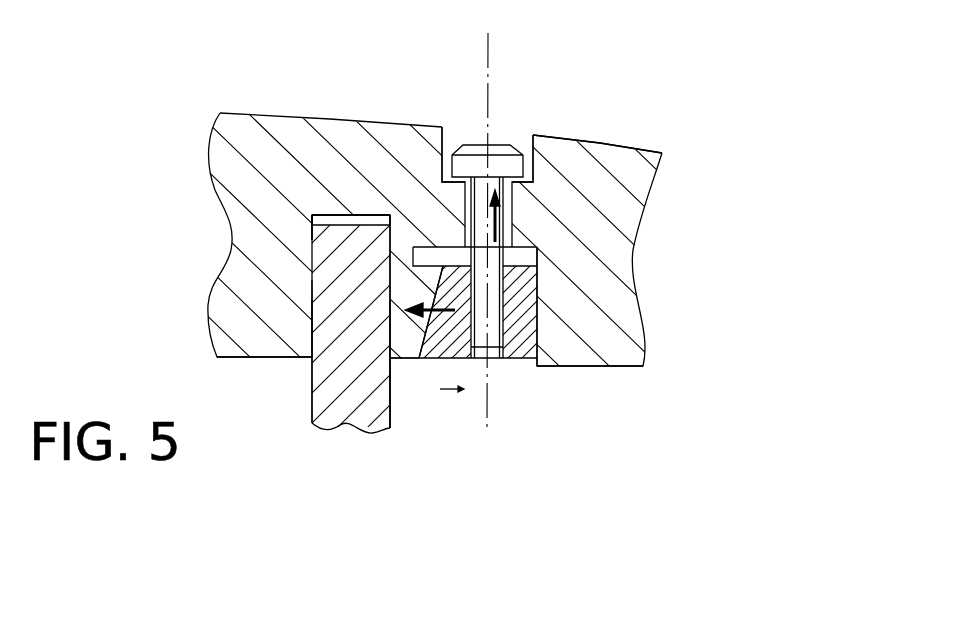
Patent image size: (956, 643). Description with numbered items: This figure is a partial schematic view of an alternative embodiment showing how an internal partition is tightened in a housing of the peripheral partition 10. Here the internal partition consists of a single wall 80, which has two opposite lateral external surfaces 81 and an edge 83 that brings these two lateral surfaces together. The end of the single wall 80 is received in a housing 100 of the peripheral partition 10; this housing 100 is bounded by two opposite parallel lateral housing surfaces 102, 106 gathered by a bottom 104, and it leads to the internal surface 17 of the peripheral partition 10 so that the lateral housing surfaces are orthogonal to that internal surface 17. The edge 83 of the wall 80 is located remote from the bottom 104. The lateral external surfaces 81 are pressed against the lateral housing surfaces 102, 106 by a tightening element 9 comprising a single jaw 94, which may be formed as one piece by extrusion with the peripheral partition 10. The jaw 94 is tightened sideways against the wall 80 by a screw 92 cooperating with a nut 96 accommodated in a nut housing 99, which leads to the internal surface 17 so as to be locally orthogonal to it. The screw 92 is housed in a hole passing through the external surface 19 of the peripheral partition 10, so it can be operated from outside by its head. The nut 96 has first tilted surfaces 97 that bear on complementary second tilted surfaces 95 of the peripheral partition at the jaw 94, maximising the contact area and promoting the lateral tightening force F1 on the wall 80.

The tightening element 9 is at (506, 75).
The peripheral partition 10 is at (627, 214).
The internal surface 17 is at (617, 367).
The external surface 19 is at (563, 135).
The single wall 80 is at (342, 413).
The lateral external surfaces 81 is at (312, 418).
The edge 83 is at (312, 220).
The screw 92 is at (495, 182).
The jaw 94 is at (394, 357).
The second tilted surfaces 95 is at (450, 383).
The nut 96 is at (517, 332).
The first tilted surfaces 97 is at (437, 280).
The nut housing 99 is at (540, 266).
The housing 100 is at (300, 205).
The lateral housing surface 102 is at (312, 295).
The bottom 104 is at (322, 213).
The lateral housing surface 106 is at (390, 285).
The clamping force F1 is at (451, 404).